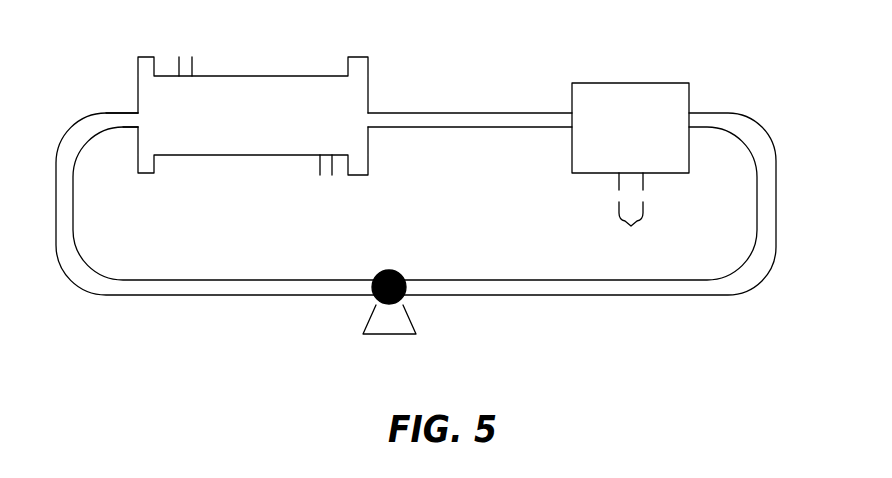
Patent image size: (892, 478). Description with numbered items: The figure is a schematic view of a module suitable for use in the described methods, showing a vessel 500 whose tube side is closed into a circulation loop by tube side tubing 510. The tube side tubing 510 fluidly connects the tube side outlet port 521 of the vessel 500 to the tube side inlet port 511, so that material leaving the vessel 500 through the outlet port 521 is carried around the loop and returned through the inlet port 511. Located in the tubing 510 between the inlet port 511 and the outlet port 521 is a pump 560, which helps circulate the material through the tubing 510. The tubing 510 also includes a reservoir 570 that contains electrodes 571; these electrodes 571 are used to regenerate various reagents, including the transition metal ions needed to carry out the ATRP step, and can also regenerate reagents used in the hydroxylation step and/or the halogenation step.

The vessel 500 is at (258, 107).
The tube side tubing 510 is at (570, 288).
The tube side inlet port 511 is at (377, 113).
The tube side outlet port 521 is at (130, 113).
The pump 560 is at (391, 335).
The reservoir 570 is at (660, 97).
The electrodes 571 is at (631, 214).